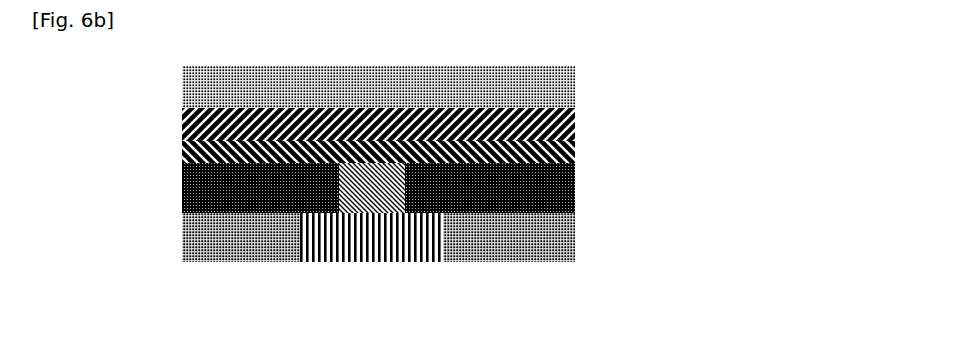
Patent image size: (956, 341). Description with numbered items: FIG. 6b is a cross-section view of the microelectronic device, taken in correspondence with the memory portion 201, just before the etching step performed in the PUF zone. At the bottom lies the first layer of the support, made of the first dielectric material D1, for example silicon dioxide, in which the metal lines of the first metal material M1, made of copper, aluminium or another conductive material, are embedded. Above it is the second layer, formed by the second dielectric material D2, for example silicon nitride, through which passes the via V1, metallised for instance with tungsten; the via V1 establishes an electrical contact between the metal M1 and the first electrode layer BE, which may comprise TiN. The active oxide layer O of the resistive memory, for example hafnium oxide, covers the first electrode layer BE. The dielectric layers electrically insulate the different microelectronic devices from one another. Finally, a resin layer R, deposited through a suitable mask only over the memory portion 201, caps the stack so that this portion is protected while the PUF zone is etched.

The memory portion 201 is at (128, 141).
The resin layer R is at (196, 97).
The active oxide layer O is at (556, 131).
The first electrode layer BE is at (556, 157).
The second dielectric material D2 is at (546, 178).
The via V1 is at (354, 190).
The first dielectric material D1 is at (543, 241).
The first metal material M1 is at (376, 252).